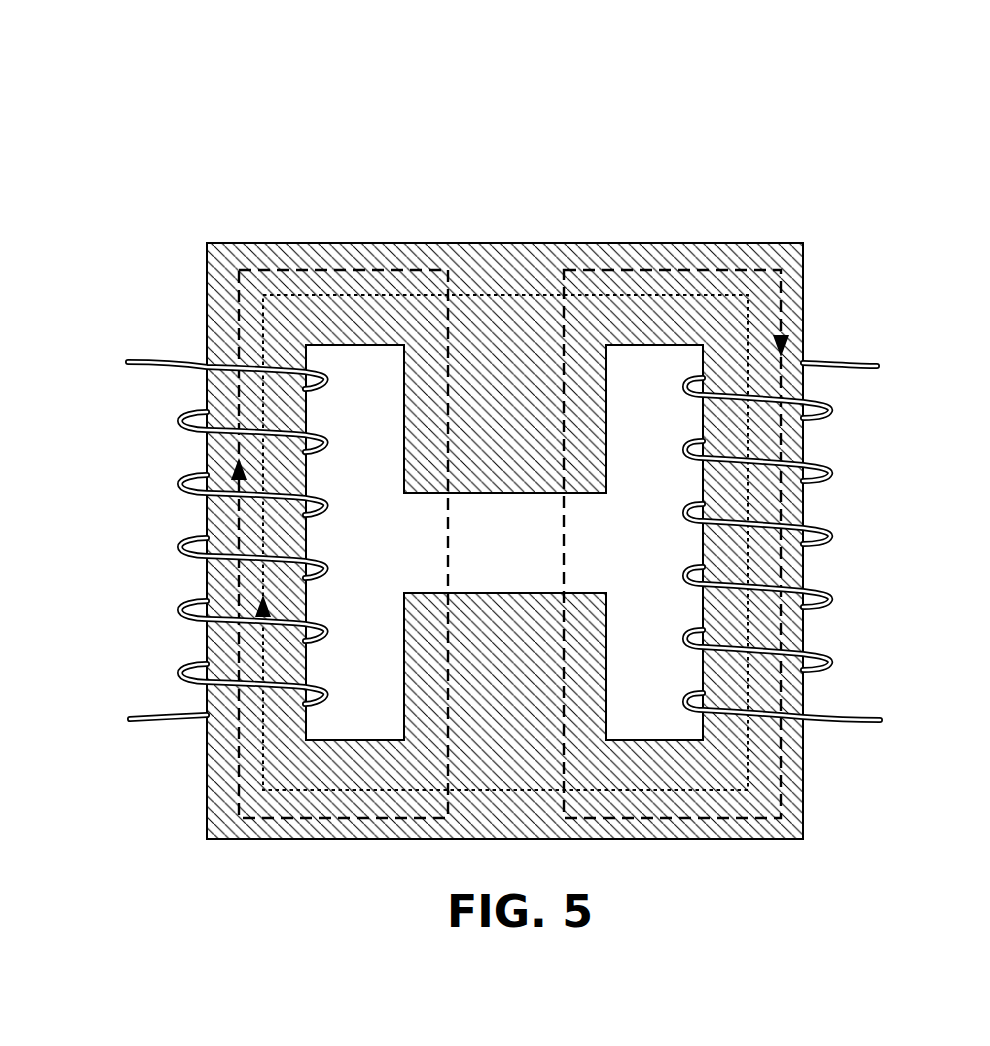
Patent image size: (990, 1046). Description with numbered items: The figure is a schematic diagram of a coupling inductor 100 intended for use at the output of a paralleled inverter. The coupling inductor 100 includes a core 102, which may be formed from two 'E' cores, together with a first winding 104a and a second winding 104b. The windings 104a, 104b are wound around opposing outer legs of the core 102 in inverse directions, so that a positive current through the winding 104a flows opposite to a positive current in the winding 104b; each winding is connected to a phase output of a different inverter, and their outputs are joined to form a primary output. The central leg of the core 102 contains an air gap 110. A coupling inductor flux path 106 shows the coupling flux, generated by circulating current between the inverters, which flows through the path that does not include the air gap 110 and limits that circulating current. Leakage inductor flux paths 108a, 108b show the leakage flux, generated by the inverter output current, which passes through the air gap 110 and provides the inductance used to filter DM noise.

The coupling inductor 100 is at (868, 167).
The core 102 is at (518, 267).
The winding 104a is at (155, 358).
The winding 104b is at (848, 363).
The coupling inductor flux path 106 is at (465, 257).
The leakage inductor flux path 108a is at (294, 263).
The leakage inductor flux path 108b is at (664, 262).
The air gap 110 is at (592, 558).